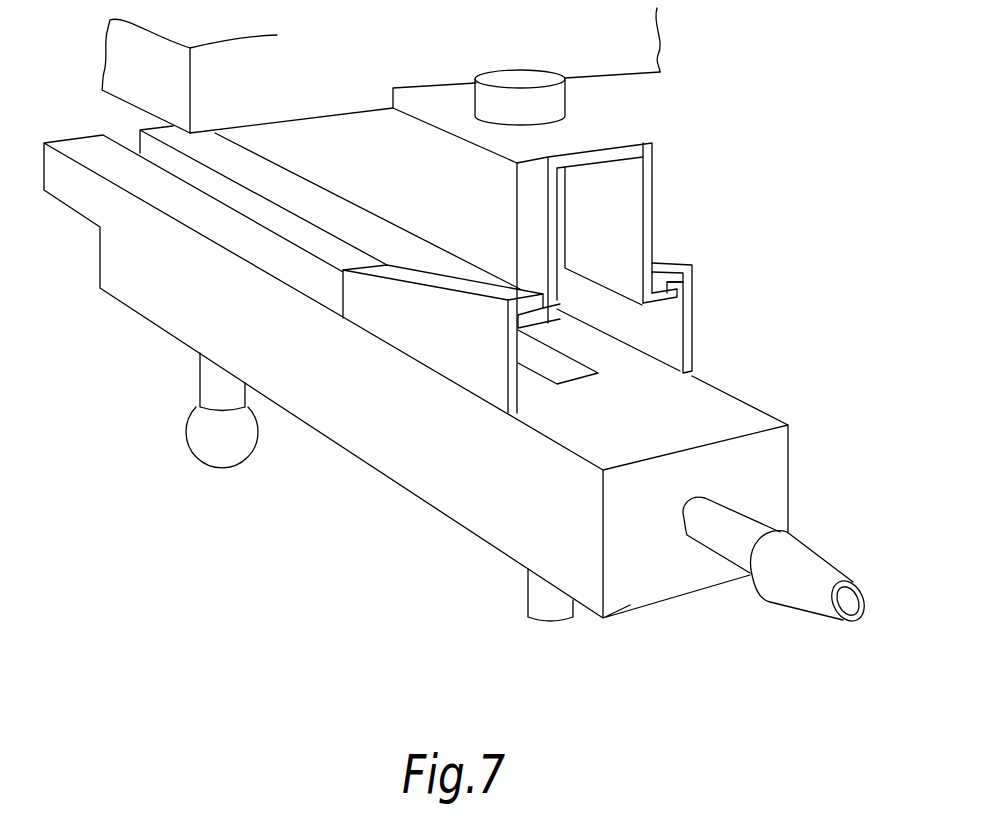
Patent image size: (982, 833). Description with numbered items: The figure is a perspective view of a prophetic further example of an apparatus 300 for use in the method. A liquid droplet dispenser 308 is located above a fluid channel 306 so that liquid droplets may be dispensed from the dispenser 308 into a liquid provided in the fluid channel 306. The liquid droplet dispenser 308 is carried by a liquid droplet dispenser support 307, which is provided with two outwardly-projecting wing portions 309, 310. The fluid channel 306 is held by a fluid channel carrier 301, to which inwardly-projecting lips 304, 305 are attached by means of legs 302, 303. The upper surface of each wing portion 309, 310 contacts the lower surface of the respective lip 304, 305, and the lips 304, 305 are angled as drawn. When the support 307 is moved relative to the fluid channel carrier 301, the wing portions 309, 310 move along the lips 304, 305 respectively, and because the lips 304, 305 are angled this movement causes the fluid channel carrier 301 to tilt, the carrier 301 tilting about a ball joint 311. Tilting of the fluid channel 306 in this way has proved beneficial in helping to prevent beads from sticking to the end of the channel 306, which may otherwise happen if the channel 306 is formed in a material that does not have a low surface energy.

The apparatus 300 is at (580, 618).
The fluid channel carrier 301 is at (307, 393).
The leg 302 is at (512, 370).
The leg 303 is at (686, 293).
The inwardly-projecting lip 304 is at (527, 302).
The inwardly-projecting lip 305 is at (682, 270).
The fluid channel 306 is at (147, 146).
The liquid droplet dispenser support 307 is at (623, 150).
The liquid droplet dispenser 308 is at (513, 78).
The wing portion 309 is at (658, 298).
The wing portion 310 is at (523, 352).
The ball joint 311 is at (200, 423).